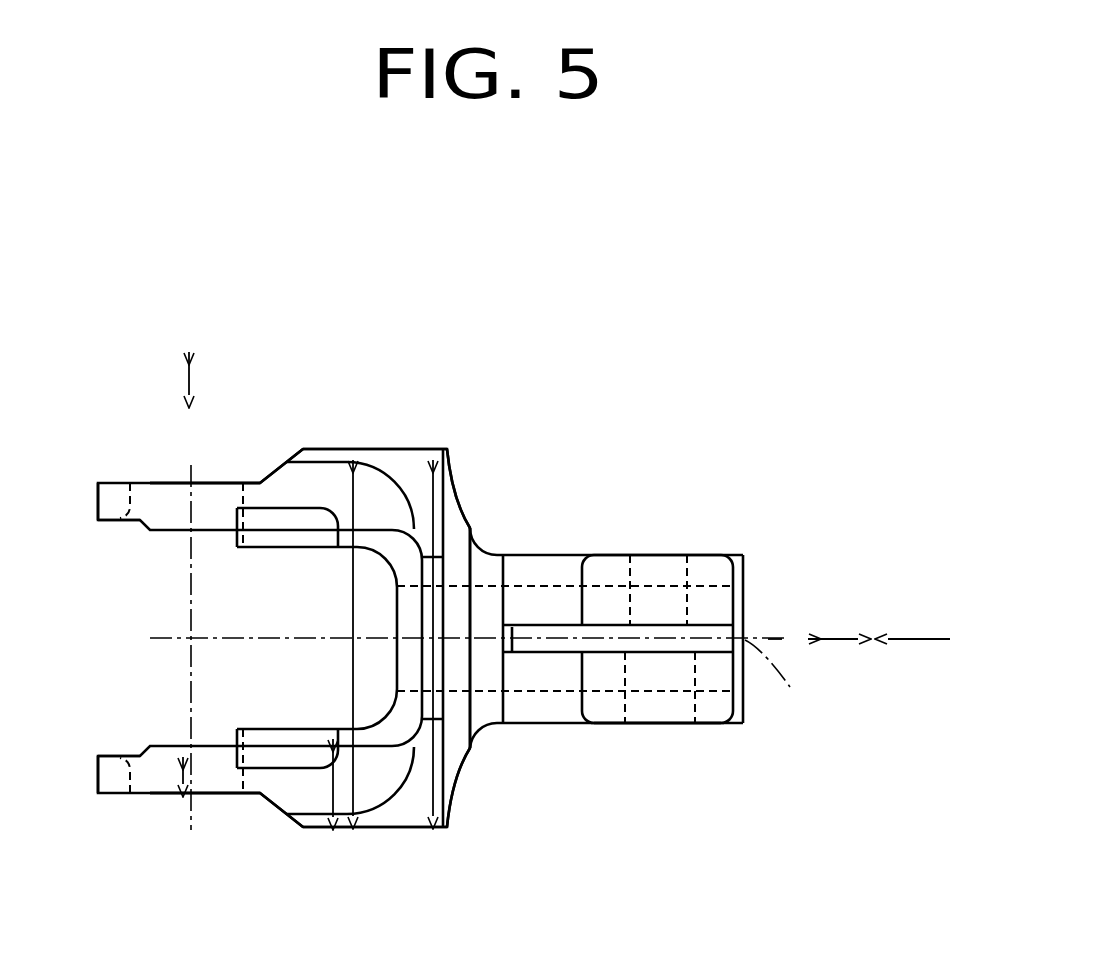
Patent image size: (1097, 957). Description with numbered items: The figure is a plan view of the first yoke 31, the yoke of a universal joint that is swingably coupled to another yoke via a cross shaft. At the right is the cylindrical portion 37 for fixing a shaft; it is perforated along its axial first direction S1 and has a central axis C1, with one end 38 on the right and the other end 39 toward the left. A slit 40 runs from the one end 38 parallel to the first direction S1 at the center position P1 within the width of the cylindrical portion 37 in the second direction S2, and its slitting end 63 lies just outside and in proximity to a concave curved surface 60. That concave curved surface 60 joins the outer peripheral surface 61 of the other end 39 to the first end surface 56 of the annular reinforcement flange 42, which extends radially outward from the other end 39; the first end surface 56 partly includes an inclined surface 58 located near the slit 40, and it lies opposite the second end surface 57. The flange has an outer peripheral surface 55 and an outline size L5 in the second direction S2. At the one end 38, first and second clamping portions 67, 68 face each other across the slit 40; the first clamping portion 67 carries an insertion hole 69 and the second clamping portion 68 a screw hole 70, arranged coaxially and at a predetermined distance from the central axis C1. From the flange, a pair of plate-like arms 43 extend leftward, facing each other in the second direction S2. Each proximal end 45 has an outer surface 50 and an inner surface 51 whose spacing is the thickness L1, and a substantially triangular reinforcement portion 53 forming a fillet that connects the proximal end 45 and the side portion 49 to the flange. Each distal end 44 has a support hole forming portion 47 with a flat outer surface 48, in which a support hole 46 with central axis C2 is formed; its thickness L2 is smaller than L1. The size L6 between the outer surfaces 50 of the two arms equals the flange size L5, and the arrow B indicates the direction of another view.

The first yoke 31 is at (465, 438).
The cylindrical portion 37 is at (574, 735).
The one end 38 is at (745, 700).
The other end 39 is at (507, 724).
The slit 40 is at (540, 626).
The reinforcement flange 42 is at (445, 842).
The arm 43 is at (86, 497).
The distal end 44 is at (110, 497).
The proximal end 45 is at (376, 470).
The support hole 46 is at (130, 483).
The support hole forming portion 47 is at (212, 483).
The outer surface 48 is at (168, 483).
The side portion 49 is at (256, 481).
The outer surface 50 is at (340, 451).
The inner surface 51 is at (290, 552).
The reinforcement portion 53 is at (383, 497).
The outer peripheral surface 55 is at (460, 793).
The first end surface 56 is at (455, 502).
The second end surface 57 is at (395, 555).
The inclined surface 58 is at (460, 597).
The concave curved surface 60 is at (485, 657).
The outer peripheral surface 61 is at (518, 565).
The slitting end 63 is at (512, 648).
The first clamping portion 67 is at (662, 710).
The second clamping portion 68 is at (668, 568).
The insertion hole 69 is at (640, 725).
The screw hole 70 is at (640, 555).
The thickness of proximal end L1 is at (322, 770).
The thickness of distal end L2 is at (170, 750).
The outline size of reinforcement flange L5 is at (423, 783).
The size between outer surfaces L6 is at (353, 660).
The first direction S1 is at (833, 637).
The second direction S2 is at (189, 373).
The central axis of cylindrical portion C1 is at (775, 639).
The central axis of support hole C2 is at (190, 690).
The center position P1 is at (777, 682).
The arrow B direction B is at (917, 642).